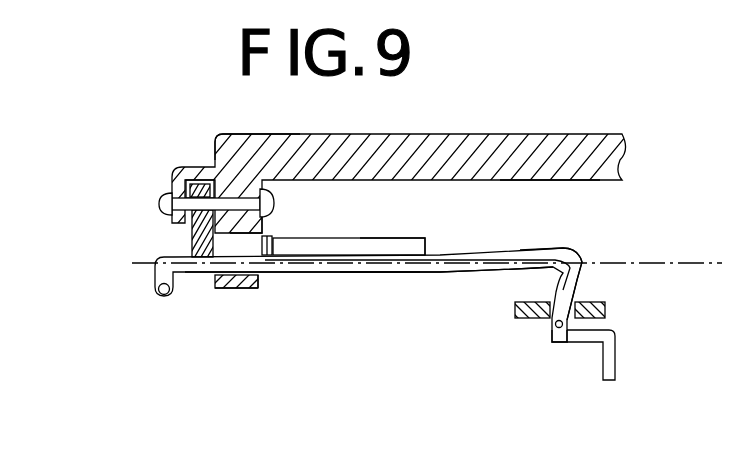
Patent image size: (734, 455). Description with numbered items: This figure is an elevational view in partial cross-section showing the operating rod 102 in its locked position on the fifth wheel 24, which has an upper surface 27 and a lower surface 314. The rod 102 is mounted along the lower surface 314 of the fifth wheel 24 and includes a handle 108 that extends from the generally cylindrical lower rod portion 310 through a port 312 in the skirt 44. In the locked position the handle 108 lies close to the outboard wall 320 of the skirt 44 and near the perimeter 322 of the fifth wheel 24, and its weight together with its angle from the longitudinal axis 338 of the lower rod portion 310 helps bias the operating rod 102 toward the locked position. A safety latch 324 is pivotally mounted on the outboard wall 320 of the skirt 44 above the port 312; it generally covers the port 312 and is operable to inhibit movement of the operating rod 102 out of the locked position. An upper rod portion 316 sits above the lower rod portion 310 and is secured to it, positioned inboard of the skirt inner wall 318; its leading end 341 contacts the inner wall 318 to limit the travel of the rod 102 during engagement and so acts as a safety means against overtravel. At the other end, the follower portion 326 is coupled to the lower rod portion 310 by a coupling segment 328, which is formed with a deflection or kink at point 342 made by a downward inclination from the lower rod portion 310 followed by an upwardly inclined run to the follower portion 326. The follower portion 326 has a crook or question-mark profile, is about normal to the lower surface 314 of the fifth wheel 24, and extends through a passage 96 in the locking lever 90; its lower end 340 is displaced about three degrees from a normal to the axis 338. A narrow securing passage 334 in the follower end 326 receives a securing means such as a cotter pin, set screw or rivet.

The fifth wheel 24 is at (500, 134).
The upper surface 27 is at (268, 134).
The perimeter 322 is at (213, 150).
The lower surface 314 is at (538, 181).
The port 312 is at (247, 250).
The safety latch 324 is at (190, 240).
The leading end 341 is at (313, 251).
The upper rod portion 316 is at (393, 237).
The longitudinal axis 338 is at (655, 261).
The coupling segment 328 is at (455, 273).
The lower rod portion 310 is at (302, 268).
The point 342 is at (472, 256).
The follower portion 326 is at (575, 288).
The lower end 340 is at (557, 344).
The securing passage 334 is at (555, 327).
The passage 96 is at (548, 314).
The locking lever 90 is at (606, 308).
The handle 108 is at (155, 275).
The outboard wall 320 is at (212, 284).
The inner wall 318 is at (261, 289).
The skirt 44 is at (240, 289).
The operating rod 102 is at (380, 273).